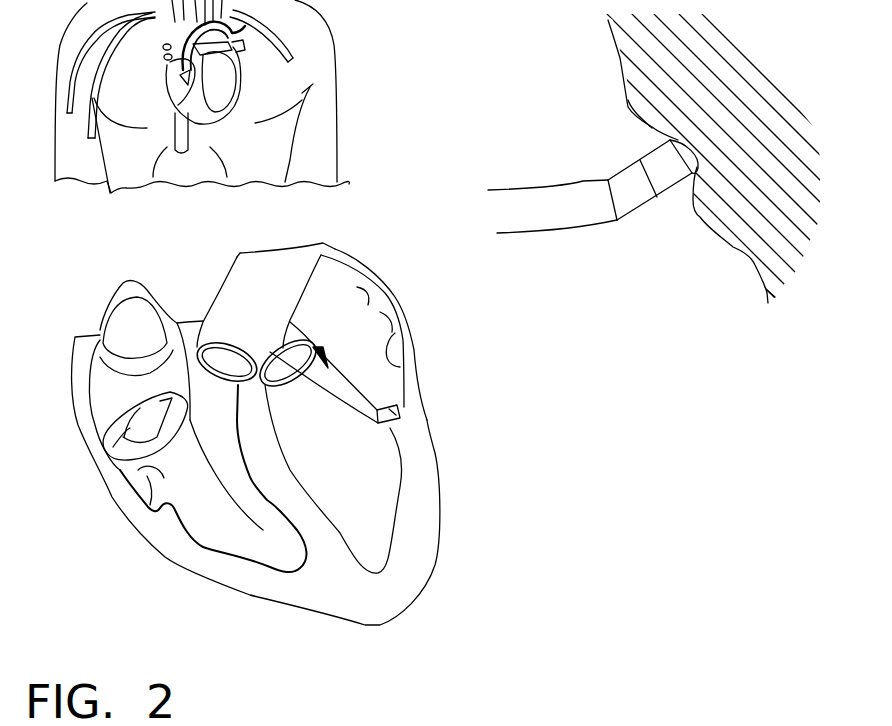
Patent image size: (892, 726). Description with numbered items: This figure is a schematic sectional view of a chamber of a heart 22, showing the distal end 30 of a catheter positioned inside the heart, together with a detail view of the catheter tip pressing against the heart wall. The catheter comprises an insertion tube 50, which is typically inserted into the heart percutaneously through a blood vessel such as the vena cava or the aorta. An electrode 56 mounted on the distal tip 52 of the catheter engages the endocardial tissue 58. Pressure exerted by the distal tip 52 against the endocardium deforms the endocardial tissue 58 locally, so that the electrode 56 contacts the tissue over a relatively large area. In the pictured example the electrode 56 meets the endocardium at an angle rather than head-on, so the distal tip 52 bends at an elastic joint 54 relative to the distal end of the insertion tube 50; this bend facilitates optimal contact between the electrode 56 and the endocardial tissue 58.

The heart 22 is at (203, 88).
The distal end 30 is at (290, 322).
The insertion tube 50 is at (180, 90).
The distal tip 52 is at (627, 193).
The elastic joint 54 is at (378, 410).
The electrode 56 is at (400, 415).
The endocardial tissue 58 is at (400, 367).